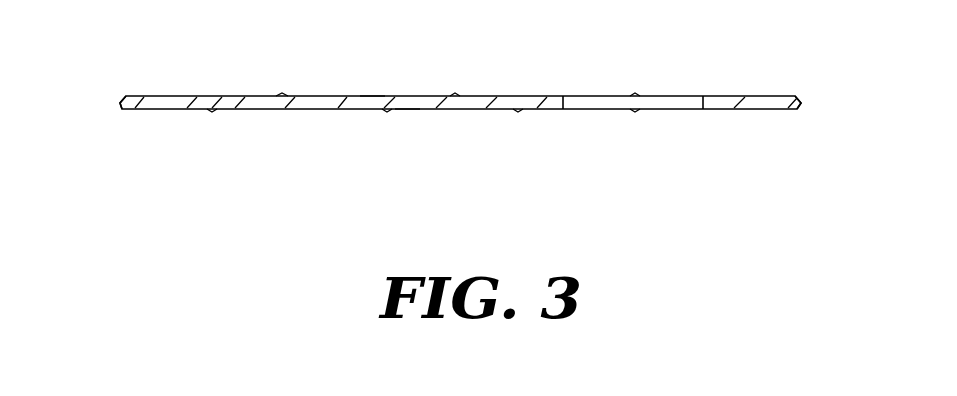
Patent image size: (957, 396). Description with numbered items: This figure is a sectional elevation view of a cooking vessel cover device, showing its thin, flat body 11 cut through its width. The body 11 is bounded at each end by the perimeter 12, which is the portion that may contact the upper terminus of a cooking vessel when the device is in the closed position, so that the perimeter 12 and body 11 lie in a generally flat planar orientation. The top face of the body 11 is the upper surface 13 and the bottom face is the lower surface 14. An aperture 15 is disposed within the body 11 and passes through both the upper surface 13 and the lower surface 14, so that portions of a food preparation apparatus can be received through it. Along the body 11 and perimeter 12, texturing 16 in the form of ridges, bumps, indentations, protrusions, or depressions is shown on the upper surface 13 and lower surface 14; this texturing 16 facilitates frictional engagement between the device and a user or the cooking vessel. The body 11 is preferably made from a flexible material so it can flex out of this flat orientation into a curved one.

The body 11 is at (212, 110).
The perimeter 12 is at (119, 100).
The upper surface 13 is at (372, 95).
The lower surface 14 is at (408, 110).
The aperture 15 is at (656, 99).
The texturing 16 is at (283, 94).